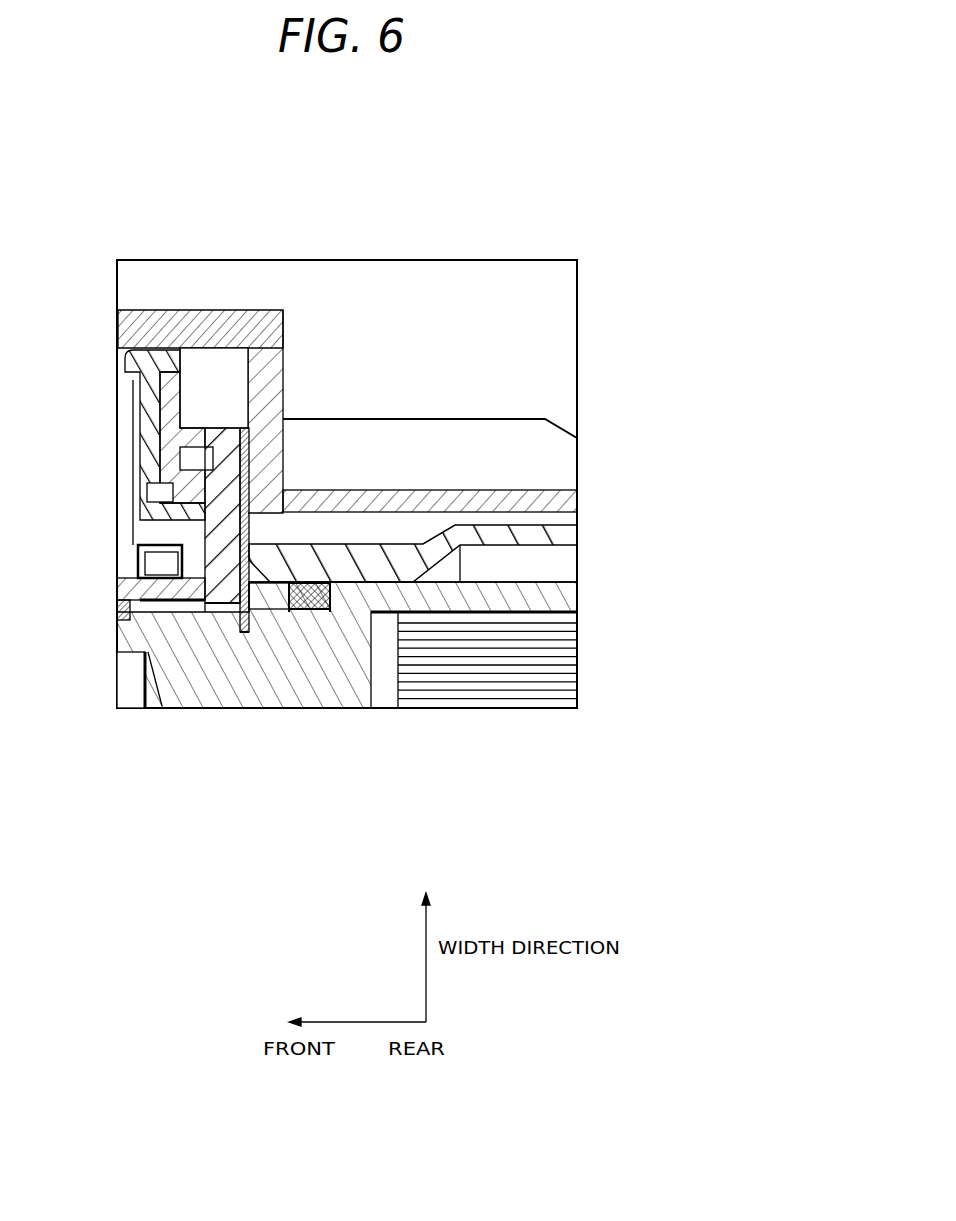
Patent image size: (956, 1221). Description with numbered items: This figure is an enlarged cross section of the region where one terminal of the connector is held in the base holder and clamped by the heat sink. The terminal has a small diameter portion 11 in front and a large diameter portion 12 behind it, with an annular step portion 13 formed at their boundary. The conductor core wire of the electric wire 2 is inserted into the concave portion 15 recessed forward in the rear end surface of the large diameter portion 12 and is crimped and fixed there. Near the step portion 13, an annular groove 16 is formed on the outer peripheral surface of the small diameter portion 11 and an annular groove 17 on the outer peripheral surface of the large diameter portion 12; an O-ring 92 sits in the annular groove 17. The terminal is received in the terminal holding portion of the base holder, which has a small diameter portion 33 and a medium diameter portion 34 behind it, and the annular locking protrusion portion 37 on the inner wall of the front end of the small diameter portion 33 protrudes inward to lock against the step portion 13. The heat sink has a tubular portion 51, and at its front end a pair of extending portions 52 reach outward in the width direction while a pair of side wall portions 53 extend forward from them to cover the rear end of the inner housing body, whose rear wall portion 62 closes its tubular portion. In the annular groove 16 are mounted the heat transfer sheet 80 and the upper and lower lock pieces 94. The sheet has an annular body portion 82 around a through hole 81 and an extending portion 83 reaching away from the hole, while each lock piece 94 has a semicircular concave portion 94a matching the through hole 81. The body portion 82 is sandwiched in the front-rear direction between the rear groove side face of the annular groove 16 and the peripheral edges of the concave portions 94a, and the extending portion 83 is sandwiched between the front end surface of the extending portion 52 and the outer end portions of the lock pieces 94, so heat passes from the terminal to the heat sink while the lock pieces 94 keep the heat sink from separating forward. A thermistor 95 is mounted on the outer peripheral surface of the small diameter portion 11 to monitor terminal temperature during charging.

The electric wire 2 is at (505, 695).
The small diameter portion 11 is at (178, 578).
The large diameter portion 12 is at (538, 578).
The step portion 13 is at (263, 550).
The concave portion 15 is at (540, 612).
The annular groove 16 is at (210, 618).
The annular groove 17 is at (312, 615).
The small diameter portion 33 is at (360, 543).
The medium diameter portion 34 is at (521, 530).
The locking protrusion portion 37 is at (297, 613).
The tubular portion 51 is at (441, 543).
The extending portion 52 is at (284, 352).
The side wall portion 53 is at (163, 310).
The rear wall portion 62 is at (117, 430).
The heat transfer sheet 80 is at (252, 455).
The through hole 81 is at (262, 633).
The body portion 82 is at (279, 637).
The extending portion 83 is at (217, 435).
The O-ring 92 is at (337, 632).
The lock piece 94 is at (214, 601).
The concave portion 94a is at (236, 625).
The thermistor 95 is at (138, 582).